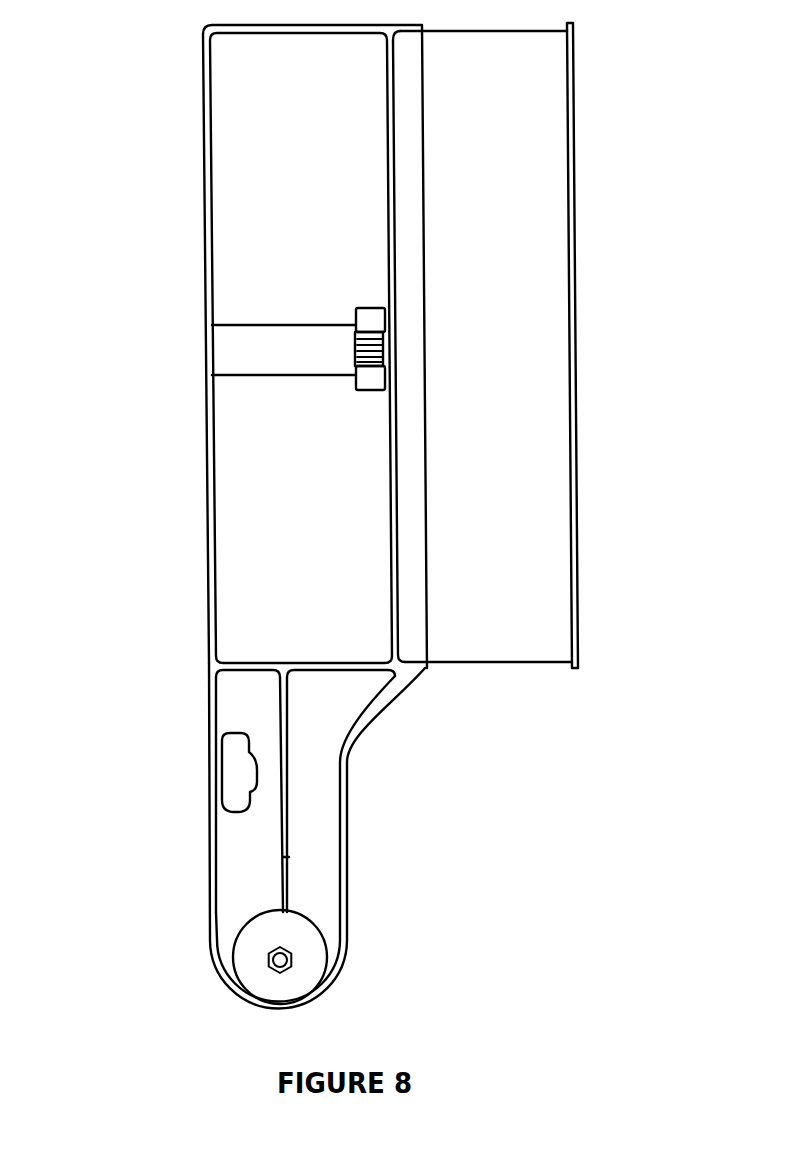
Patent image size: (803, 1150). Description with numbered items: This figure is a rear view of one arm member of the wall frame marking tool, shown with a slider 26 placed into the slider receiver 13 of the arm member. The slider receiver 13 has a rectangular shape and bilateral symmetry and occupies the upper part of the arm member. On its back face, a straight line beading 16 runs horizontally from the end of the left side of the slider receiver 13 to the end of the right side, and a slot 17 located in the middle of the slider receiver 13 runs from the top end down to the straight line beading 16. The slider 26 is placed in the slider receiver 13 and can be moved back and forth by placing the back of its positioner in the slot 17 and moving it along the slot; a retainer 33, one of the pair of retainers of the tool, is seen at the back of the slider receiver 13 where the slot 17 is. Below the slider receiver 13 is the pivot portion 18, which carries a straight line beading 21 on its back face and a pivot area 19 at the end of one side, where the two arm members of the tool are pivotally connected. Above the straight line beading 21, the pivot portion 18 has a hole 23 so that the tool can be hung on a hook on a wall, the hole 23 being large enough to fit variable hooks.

The slider receiver 13 is at (200, 122).
The straight line beading 16 is at (390, 518).
The slot 17 is at (250, 347).
The retainer 33 is at (370, 317).
The slider 26 is at (577, 441).
The straight line beading 21 is at (290, 734).
The pivot portion 18 is at (348, 815).
The hole 23 is at (230, 760).
The pivot area 19 is at (330, 975).